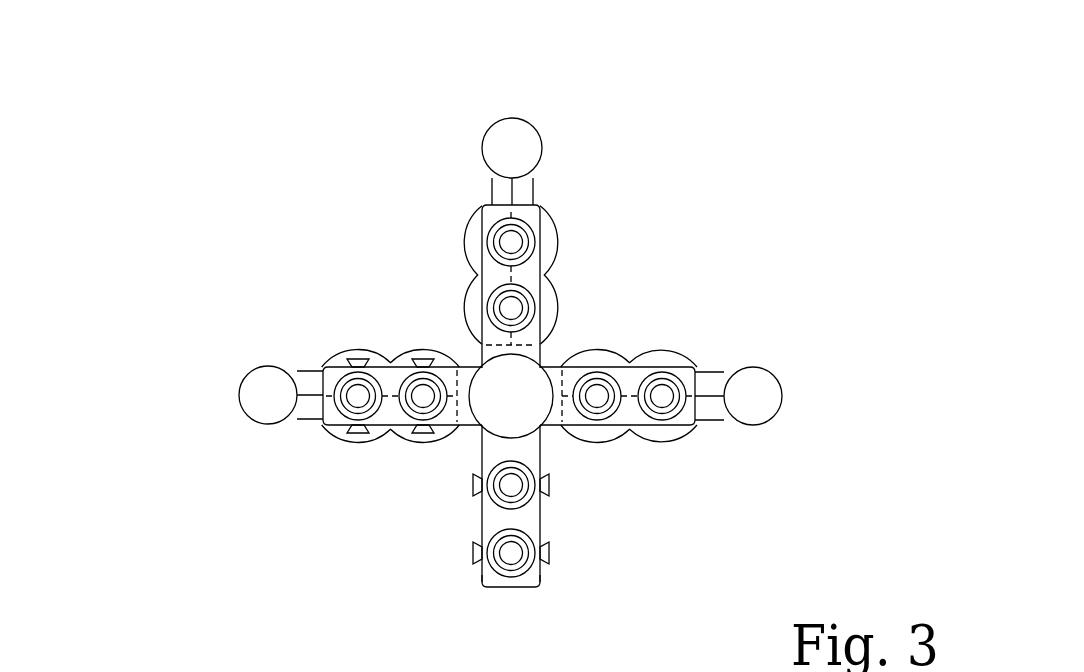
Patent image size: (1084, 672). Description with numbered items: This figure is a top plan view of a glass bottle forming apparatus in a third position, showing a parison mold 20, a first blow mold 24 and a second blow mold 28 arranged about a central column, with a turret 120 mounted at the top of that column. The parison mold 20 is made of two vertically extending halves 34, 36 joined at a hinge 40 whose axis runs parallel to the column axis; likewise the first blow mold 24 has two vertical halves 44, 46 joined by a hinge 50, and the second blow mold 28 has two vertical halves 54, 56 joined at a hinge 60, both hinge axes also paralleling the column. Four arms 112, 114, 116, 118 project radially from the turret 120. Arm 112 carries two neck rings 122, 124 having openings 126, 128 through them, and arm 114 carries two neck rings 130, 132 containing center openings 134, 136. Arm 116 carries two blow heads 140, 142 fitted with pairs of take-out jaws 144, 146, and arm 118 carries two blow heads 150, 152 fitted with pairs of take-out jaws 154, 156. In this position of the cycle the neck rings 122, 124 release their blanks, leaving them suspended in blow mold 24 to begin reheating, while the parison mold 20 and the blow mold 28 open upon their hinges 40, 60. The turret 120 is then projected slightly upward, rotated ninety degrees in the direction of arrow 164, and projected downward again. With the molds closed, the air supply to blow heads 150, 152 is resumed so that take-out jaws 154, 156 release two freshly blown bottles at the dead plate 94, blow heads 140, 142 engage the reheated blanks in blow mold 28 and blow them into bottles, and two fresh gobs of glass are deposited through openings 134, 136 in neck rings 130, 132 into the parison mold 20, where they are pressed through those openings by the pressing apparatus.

The parison mold 20 is at (584, 121).
The first blow mold 24 is at (224, 394).
The second blow mold 28 is at (794, 462).
The half of parison mold 34 is at (470, 225).
The half of parison mold 36 is at (550, 226).
The hinge 40 is at (518, 127).
The half of first blow mold 44 is at (357, 438).
The half of first blow mold 46 is at (390, 358).
The hinge 50 is at (250, 410).
The half of second blow mold 54 is at (668, 360).
The half of second blow mold 56 is at (675, 437).
The hinge 60 is at (773, 395).
The dead plate 94 is at (517, 648).
The arm 112 is at (530, 278).
The arm 114 is at (627, 420).
The arm 116 is at (490, 523).
The arm 118 is at (388, 373).
The turret 120 is at (494, 394).
The neck ring 122 is at (522, 224).
The neck ring 124 is at (530, 310).
The opening 126 is at (515, 243).
The opening 128 is at (507, 306).
The neck ring 130 is at (678, 410).
The neck ring 132 is at (598, 420).
The center opening 134 is at (665, 393).
The center opening 136 is at (603, 388).
The blow head 140 is at (518, 568).
The blow head 142 is at (520, 500).
The take-out jaws 144 is at (473, 553).
The take-out jaws 146 is at (473, 490).
The blow head 150 is at (340, 405).
The blow head 152 is at (402, 418).
The take-out jaws 154 is at (355, 357).
The take-out jaws 156 is at (427, 358).
The arrow 164 is at (633, 187).